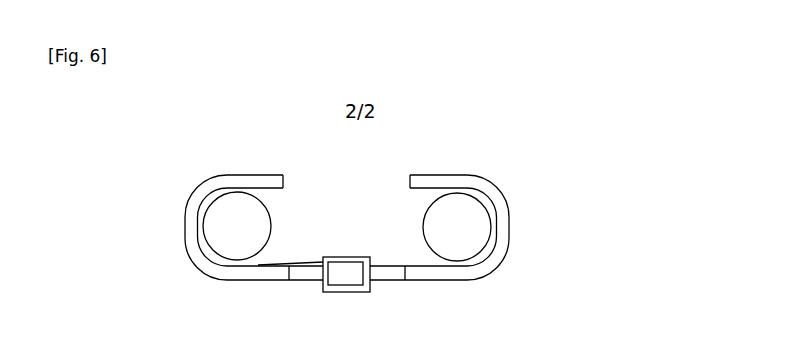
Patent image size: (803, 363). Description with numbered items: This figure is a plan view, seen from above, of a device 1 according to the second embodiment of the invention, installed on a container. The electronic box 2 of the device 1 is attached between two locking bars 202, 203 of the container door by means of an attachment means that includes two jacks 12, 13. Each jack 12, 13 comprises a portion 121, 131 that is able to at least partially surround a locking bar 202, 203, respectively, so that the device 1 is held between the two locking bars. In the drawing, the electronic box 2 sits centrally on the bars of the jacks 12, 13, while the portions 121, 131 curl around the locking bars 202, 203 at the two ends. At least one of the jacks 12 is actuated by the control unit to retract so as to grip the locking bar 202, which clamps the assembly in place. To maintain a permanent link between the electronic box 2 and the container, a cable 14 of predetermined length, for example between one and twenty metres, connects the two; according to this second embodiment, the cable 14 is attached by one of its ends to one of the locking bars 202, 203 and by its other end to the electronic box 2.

The device 1 is at (548, 281).
The electronic box 2 is at (347, 292).
The jack 12 is at (250, 280).
The jack 13 is at (435, 280).
The cable 14 is at (288, 263).
The portion 121 is at (203, 205).
The portion 131 is at (483, 195).
The locking bar 202 is at (230, 208).
The locking bar 203 is at (462, 208).